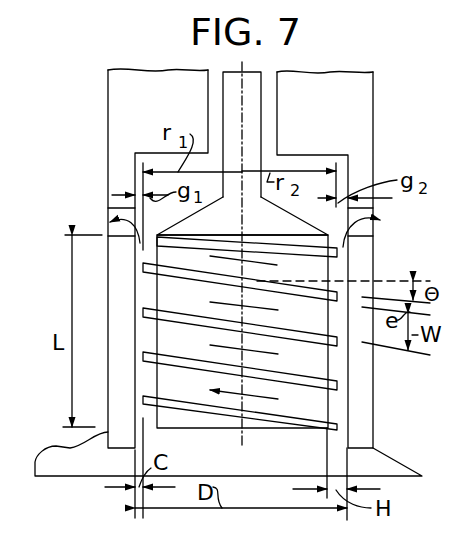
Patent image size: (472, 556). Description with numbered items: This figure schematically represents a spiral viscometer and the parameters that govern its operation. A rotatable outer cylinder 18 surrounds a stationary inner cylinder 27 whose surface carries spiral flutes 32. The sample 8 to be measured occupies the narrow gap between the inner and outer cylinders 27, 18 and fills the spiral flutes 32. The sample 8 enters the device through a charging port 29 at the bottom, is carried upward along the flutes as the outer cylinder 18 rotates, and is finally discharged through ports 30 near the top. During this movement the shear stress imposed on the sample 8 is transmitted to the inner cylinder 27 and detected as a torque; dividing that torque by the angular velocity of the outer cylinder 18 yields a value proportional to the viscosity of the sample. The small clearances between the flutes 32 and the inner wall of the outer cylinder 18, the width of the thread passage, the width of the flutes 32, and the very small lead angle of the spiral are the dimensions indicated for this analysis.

The rotatable outer cylinder 18 is at (368, 400).
The ports 30 is at (371, 235).
The sample 8 is at (376, 430).
The spiral flutes 32 is at (202, 408).
The stationary inner cylinder 27 is at (290, 408).
The charging port 29 is at (338, 442).